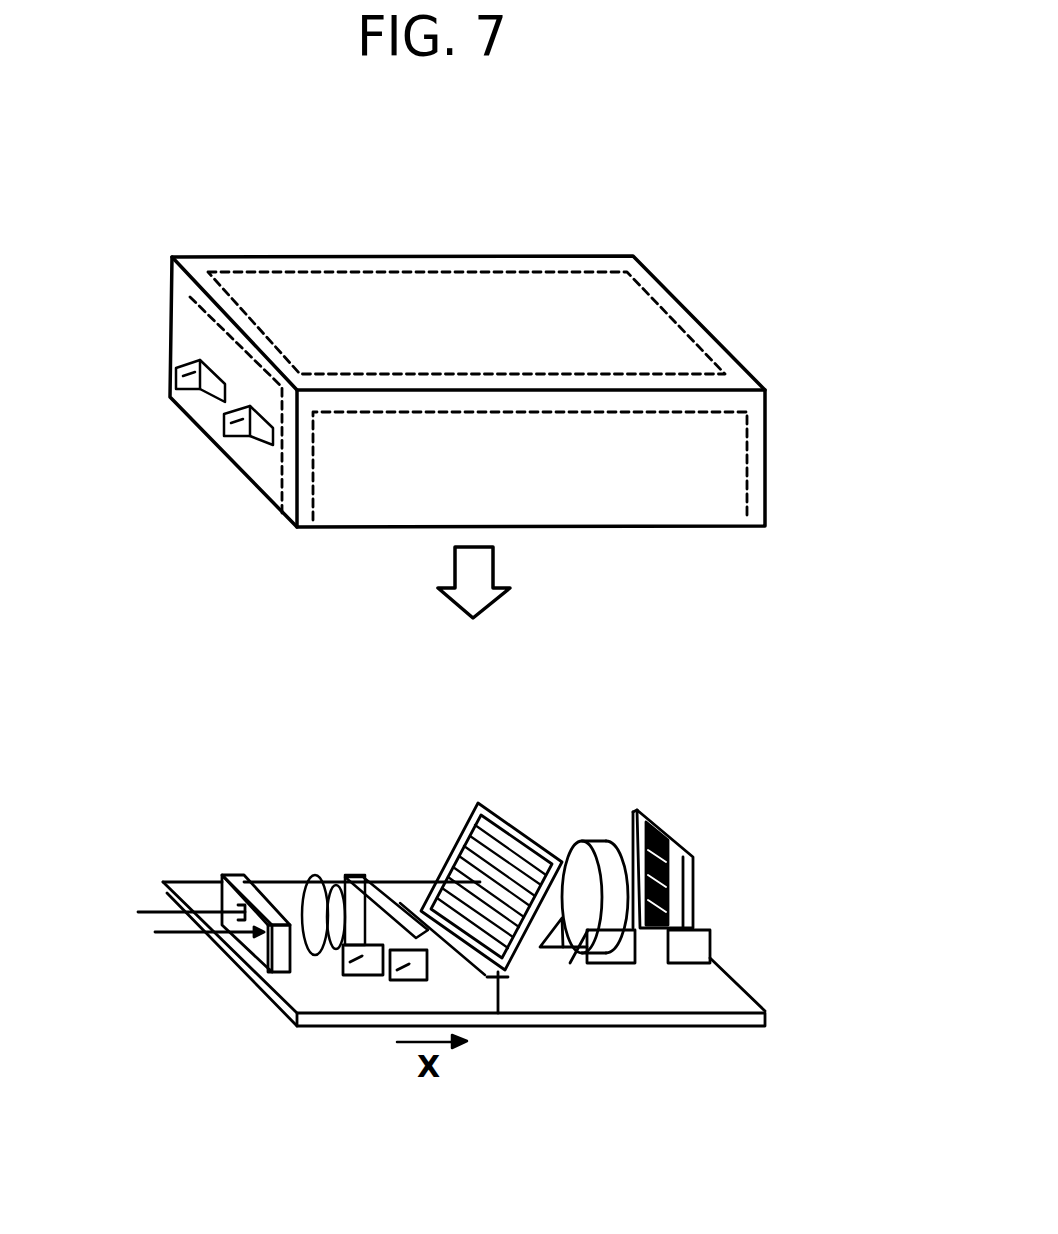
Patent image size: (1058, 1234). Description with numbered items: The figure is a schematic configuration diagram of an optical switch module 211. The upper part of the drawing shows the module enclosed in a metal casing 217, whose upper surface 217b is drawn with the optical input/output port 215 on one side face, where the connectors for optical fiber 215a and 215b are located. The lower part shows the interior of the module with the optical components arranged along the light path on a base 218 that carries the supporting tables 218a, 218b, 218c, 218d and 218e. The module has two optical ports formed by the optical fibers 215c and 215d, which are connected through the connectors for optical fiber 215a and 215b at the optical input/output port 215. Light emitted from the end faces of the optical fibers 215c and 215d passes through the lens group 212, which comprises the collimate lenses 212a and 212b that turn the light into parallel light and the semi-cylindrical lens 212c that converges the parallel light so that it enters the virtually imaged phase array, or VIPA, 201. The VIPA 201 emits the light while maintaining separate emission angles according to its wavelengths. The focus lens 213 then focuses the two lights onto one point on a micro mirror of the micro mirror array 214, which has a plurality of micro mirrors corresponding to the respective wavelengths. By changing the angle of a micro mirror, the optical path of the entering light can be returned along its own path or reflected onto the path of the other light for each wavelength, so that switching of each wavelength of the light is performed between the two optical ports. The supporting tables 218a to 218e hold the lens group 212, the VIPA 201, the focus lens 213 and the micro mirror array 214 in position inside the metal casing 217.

The virtually imaged phase array (VIPA) 201 is at (490, 805).
The optical switch module 211 is at (716, 724).
The lens unit 212 is at (455, 762).
The collimate lens 212a is at (326, 872).
The collimate lens 212b is at (347, 870).
The semi-cylindrical lens 212c is at (387, 880).
The focus lens 213 is at (603, 843).
The micro mirror array 214 is at (667, 824).
The optical input/output port 215 is at (146, 943).
The connector for optical fiber 215a is at (197, 362).
The connector for optical fiber 215b is at (252, 437).
The optical fiber 215c is at (158, 912).
The optical fiber 215d is at (176, 934).
The metal casing 217 is at (748, 300).
The housing upper surface 217b is at (657, 273).
The substrate board 218 is at (247, 882).
The supporting table 218a is at (326, 980).
The supporting table 218b is at (383, 984).
The supporting table 218c is at (498, 990).
The supporting table 218d is at (615, 952).
The supporting table 218e is at (687, 955).